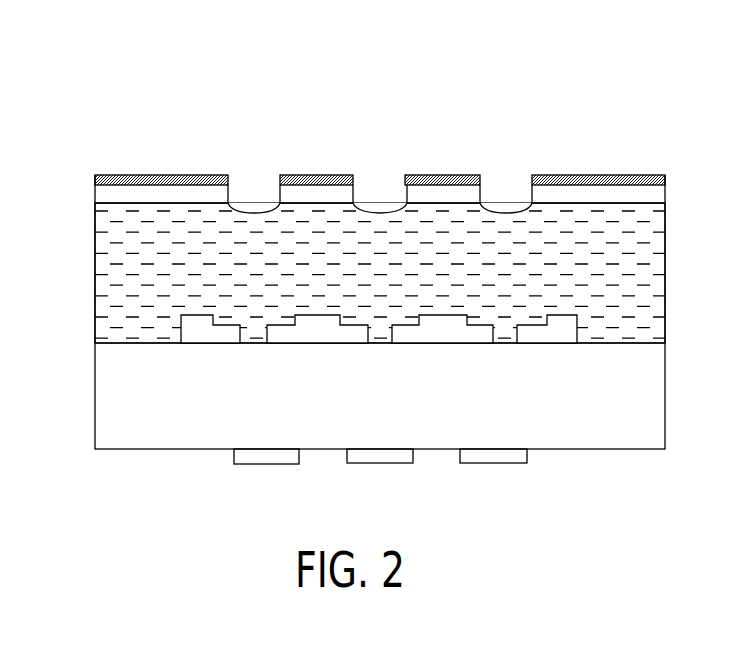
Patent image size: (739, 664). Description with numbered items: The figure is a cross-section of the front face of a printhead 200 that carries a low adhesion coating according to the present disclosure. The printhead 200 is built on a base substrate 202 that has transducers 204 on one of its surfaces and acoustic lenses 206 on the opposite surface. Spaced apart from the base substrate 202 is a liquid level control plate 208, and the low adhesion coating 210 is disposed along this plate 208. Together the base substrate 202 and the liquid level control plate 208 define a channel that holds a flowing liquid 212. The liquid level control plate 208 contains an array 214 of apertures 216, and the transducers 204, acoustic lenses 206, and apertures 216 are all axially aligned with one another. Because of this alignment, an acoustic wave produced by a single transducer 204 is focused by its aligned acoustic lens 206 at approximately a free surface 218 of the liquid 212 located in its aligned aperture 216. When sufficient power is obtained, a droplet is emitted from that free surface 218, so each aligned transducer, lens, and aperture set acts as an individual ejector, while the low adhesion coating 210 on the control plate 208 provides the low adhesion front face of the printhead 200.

The printhead 200 is at (558, 77).
The base substrate 202 is at (105, 395).
The transducers 204 is at (267, 455).
The acoustic lenses 206 is at (443, 333).
The liquid level control plate 208 is at (105, 193).
The low adhesion coating 210 is at (162, 178).
The flowing liquid 212 is at (105, 265).
The array 214 is at (350, 102).
The apertures 216 is at (368, 180).
The free surface 218 is at (262, 210).